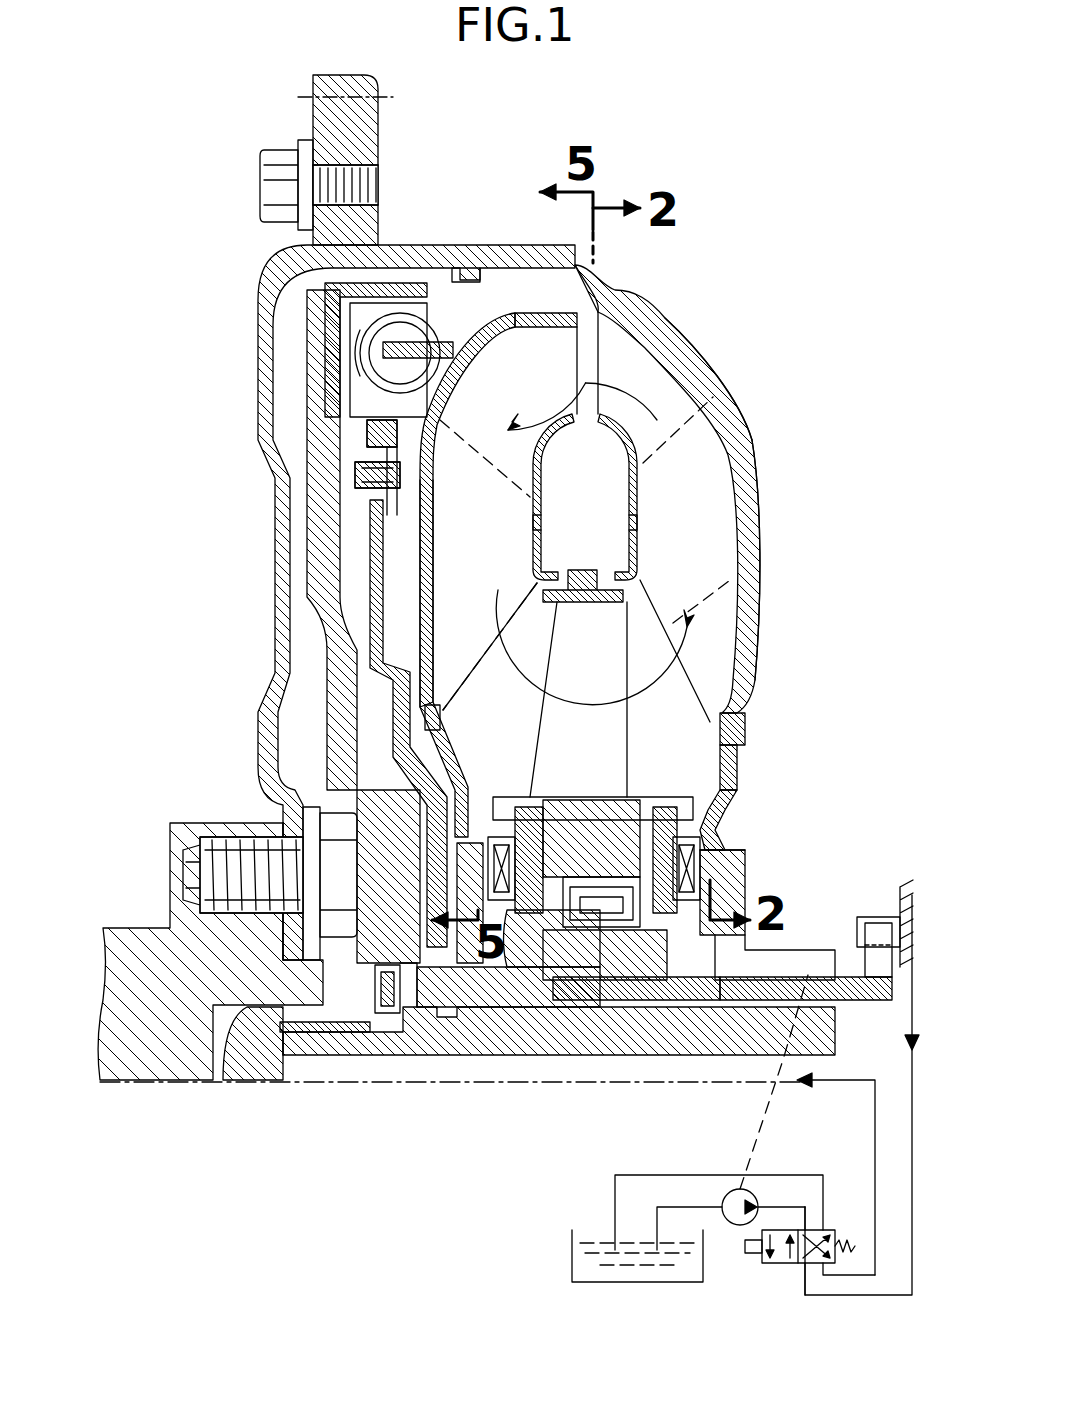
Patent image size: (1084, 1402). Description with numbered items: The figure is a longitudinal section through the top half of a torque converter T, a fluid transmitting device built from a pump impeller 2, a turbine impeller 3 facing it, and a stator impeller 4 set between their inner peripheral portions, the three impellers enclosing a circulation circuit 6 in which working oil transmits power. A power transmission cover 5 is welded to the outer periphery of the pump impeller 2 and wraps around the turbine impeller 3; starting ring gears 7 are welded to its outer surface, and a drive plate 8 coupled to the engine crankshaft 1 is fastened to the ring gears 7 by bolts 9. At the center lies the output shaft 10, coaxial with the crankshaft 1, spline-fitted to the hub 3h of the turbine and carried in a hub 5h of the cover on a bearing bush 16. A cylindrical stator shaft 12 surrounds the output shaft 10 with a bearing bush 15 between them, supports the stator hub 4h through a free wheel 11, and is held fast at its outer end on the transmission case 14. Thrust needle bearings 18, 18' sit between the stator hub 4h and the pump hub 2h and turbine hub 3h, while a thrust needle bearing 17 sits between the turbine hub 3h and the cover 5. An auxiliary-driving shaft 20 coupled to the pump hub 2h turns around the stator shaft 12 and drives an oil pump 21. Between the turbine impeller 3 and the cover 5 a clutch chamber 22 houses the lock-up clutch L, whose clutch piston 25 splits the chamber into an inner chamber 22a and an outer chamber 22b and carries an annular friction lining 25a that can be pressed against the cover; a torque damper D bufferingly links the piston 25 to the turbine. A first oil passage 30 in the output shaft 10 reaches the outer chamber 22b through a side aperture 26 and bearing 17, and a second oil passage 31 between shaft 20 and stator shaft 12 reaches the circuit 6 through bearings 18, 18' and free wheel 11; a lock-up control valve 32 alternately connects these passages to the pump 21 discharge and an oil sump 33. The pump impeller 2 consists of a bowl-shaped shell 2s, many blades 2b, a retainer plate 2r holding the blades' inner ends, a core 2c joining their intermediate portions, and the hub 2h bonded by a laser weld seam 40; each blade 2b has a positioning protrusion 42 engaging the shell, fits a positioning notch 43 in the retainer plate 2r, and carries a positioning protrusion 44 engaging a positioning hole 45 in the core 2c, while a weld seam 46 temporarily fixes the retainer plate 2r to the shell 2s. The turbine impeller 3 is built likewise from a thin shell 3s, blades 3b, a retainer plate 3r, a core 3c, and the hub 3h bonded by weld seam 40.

The crankshaft 1 is at (140, 930).
The pump impeller 2 is at (757, 440).
The shell 2s is at (740, 410).
The blades 2b is at (745, 540).
The core 2c is at (630, 446).
The retainer plate 2r is at (705, 760).
The hub 2h is at (748, 877).
The turbine impeller 3 is at (563, 318).
The shell 3s is at (432, 504).
The blades 3b is at (497, 595).
The core 3c is at (537, 488).
The retainer plate 3r is at (470, 778).
The hub 3h is at (505, 1010).
The stator impeller 4 is at (588, 604).
The hub 4h is at (570, 797).
The power transmission cover 5 is at (320, 536).
The hub 5h is at (243, 1066).
The circulation circuit 6 is at (694, 578).
The starting ring gears 7 is at (360, 146).
The drive plate 8 is at (265, 722).
The bolts 9 is at (268, 182).
The output shaft 10 is at (600, 1055).
The free wheel 11 is at (608, 882).
The stator shaft 12 is at (865, 1000).
The transmission case 14 is at (905, 905).
The bearing bush 15 is at (647, 1003).
The bearing bush 16 is at (300, 1055).
The thrust needle bearing 17 is at (375, 1035).
The thrust needle bearing 18 is at (532, 827).
The thrust needle bearing 18' is at (667, 827).
The auxiliary-driving shaft 20 is at (835, 945).
The oil pump 21 is at (740, 1226).
The clutch chamber 22 is at (178, 430).
The inner chamber 22a is at (367, 425).
The outer chamber 22b is at (380, 447).
The clutch piston 25 is at (380, 556).
The friction lining 25a is at (350, 346).
The side aperture 26 is at (387, 1040).
The first oil passage 30 is at (842, 1085).
The second oil passage 31 is at (905, 1297).
The lock-up control valve 32 is at (775, 1264).
The oil sump 33 is at (572, 1264).
The annular weld seam 40 is at (740, 850).
The positioning protrusion 42 is at (745, 742).
The positioning notches 43 is at (745, 713).
The positioning protrusion 44 is at (627, 515).
The positioning hole 45 is at (640, 525).
The annular weld seam 46 is at (735, 812).
The torque damper D is at (447, 321).
The lock-up clutch L is at (372, 587).
The torque converter T is at (752, 352).